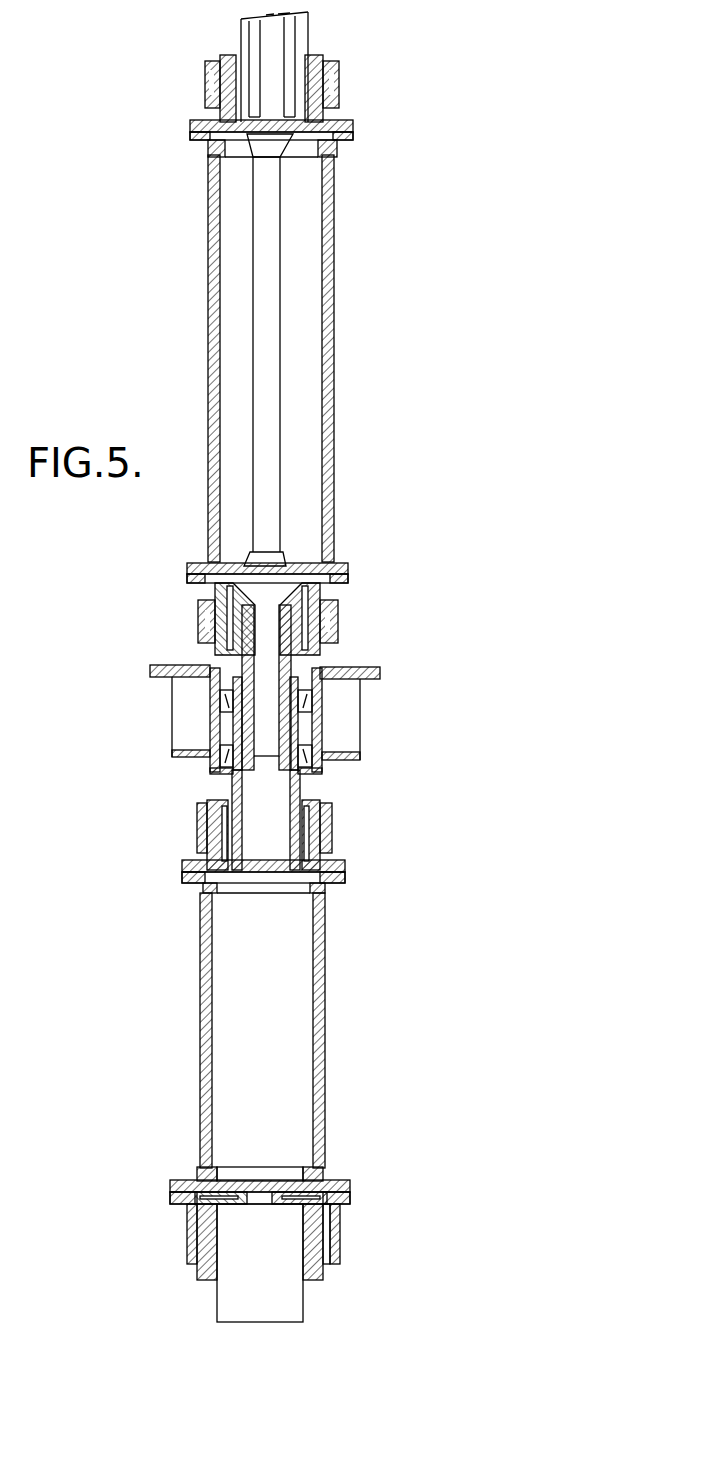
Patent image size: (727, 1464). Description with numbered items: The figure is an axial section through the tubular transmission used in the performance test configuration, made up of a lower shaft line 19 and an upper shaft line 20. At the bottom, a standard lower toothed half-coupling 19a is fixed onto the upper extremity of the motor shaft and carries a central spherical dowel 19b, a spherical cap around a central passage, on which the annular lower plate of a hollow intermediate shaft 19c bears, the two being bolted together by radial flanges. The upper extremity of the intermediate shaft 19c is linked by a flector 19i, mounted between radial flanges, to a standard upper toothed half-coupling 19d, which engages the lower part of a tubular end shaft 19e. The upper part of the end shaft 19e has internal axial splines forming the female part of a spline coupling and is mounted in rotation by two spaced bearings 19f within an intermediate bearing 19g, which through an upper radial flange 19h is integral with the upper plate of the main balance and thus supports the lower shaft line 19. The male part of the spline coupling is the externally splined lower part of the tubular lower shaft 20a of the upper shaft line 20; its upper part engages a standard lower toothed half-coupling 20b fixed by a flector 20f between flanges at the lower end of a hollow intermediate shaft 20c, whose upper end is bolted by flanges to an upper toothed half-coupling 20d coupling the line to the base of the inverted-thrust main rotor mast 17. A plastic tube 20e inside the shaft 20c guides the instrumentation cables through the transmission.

The inverted-thrust main rotor mast 17 is at (314, 30).
The lower shaft line 19 is at (186, 1005).
The lower toothed half-coupling 19a is at (338, 1246).
The central spherical dowel 19b is at (318, 1180).
The hollow intermediate shaft 19c is at (320, 1057).
The upper toothed half-coupling 19d is at (333, 855).
The tubular end shaft 19e is at (231, 786).
The bearings 19f is at (222, 703).
The intermediate bearing 19g is at (333, 728).
The upper radial flange 19h is at (172, 665).
The flector 19i is at (186, 868).
The upper shaft line 20 is at (206, 332).
The tubular lower shaft 20a is at (287, 658).
The lower toothed half-coupling 20b is at (338, 603).
The hollow intermediate shaft 20c is at (330, 240).
The upper toothed half-coupling 20d is at (346, 86).
The tube 20e is at (273, 205).
The flector 20f is at (186, 573).